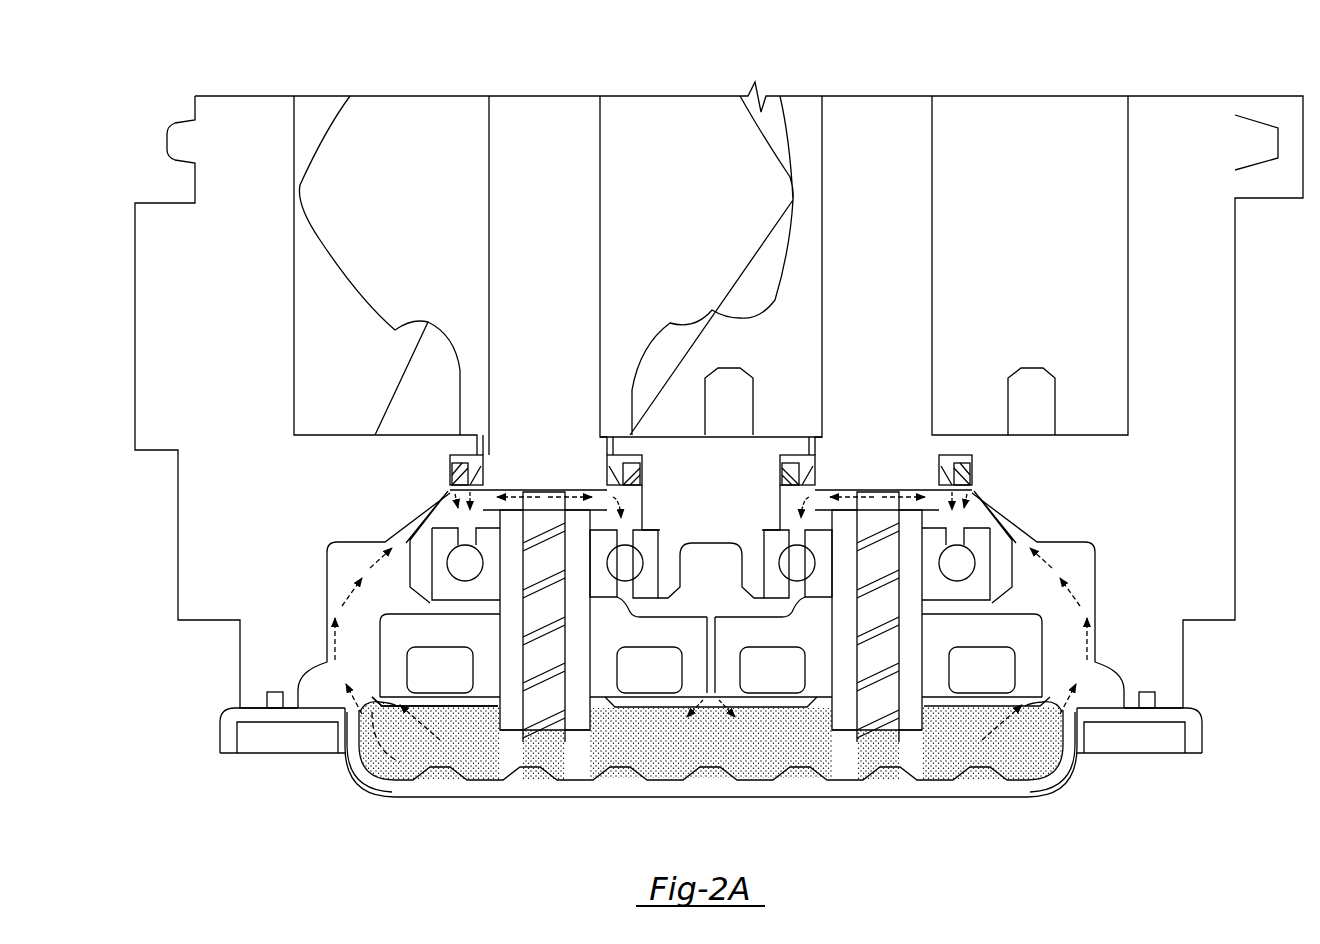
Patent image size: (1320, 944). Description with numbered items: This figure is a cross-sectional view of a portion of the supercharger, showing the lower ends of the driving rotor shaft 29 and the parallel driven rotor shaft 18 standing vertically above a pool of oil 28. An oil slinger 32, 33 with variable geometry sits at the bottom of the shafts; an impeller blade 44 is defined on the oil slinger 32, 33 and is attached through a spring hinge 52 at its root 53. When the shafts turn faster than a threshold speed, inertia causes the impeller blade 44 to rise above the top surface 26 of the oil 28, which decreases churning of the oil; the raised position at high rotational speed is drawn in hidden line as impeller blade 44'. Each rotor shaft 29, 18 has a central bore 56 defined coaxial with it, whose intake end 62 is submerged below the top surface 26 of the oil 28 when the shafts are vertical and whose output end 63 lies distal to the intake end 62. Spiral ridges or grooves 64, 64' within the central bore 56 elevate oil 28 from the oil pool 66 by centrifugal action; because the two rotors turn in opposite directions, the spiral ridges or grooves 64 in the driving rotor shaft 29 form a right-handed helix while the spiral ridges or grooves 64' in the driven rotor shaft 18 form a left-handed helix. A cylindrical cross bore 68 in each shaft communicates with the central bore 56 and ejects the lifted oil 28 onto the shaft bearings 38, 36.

The driven rotor shaft 18 is at (874, 106).
The driving rotor shaft 29 is at (543, 106).
The top surface 26 is at (1080, 725).
The oil 28 is at (760, 781).
The oil slinger 32 is at (644, 712).
The oil slinger 33 is at (987, 710).
The shaft bearing 36 is at (992, 588).
The shaft bearing 38 is at (430, 587).
The impeller blade 44 is at (378, 776).
The impeller blade at high rotational speed 44' is at (338, 747).
The spring hinge 52 is at (412, 703).
The root 53 is at (425, 710).
The central bore 56 is at (555, 723).
The intake end 62 is at (582, 732).
The output end 63 is at (543, 547).
The spiral ridges or grooves 64 is at (544, 630).
The spiral ridges or grooves 64' is at (878, 630).
The oil pool 66 is at (665, 757).
The cylindrical cross bore 68 is at (575, 490).